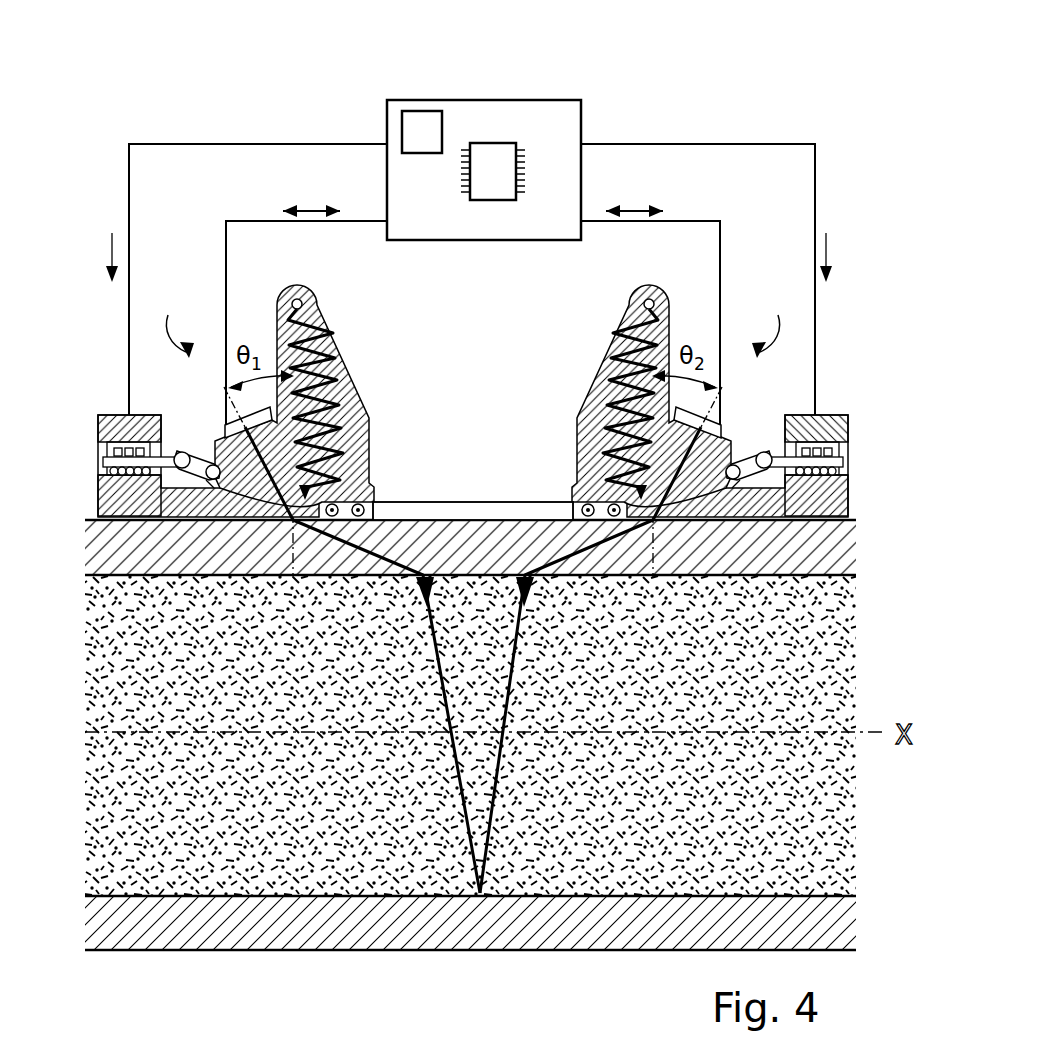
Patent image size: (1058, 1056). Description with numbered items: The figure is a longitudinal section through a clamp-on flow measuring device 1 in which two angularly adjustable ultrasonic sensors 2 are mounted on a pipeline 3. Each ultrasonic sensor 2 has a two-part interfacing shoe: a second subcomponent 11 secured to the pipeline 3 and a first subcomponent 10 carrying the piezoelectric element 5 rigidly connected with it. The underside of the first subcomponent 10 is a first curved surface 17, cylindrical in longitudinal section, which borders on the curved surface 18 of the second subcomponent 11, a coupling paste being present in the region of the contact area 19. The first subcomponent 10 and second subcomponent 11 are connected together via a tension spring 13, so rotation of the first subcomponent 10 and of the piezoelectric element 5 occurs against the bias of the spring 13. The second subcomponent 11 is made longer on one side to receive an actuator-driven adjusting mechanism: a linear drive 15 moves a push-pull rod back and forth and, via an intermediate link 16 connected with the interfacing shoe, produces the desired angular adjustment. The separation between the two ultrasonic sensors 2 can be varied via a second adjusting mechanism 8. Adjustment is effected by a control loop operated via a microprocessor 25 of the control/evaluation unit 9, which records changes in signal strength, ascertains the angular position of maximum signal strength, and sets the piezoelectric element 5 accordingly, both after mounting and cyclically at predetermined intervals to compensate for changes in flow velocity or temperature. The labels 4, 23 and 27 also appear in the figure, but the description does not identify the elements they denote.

The flow measuring device 1 is at (711, 81).
The ultrasonic sensor 2 is at (472, 321).
The pipeline 3 is at (237, 925).
The solid material to be cut 4 is at (357, 862).
The piezoelectric element 5 is at (223, 433).
The second adjusting mechanism 8 is at (482, 505).
The control/evaluation unit 9 is at (552, 120).
The first subcomponent 10 is at (353, 404).
The second subcomponent 11 is at (127, 498).
The tension spring 13 is at (315, 348).
The linear drive 15 is at (118, 447).
The intermediate link 16 is at (198, 458).
The first curved surface 17 is at (360, 498).
The curved surface 18 is at (245, 486).
The contact area 19 is at (337, 450).
The window plate 23 is at (473, 511).
The microprocessor 25 is at (490, 150).
The sensor / memory module 27 is at (430, 122).